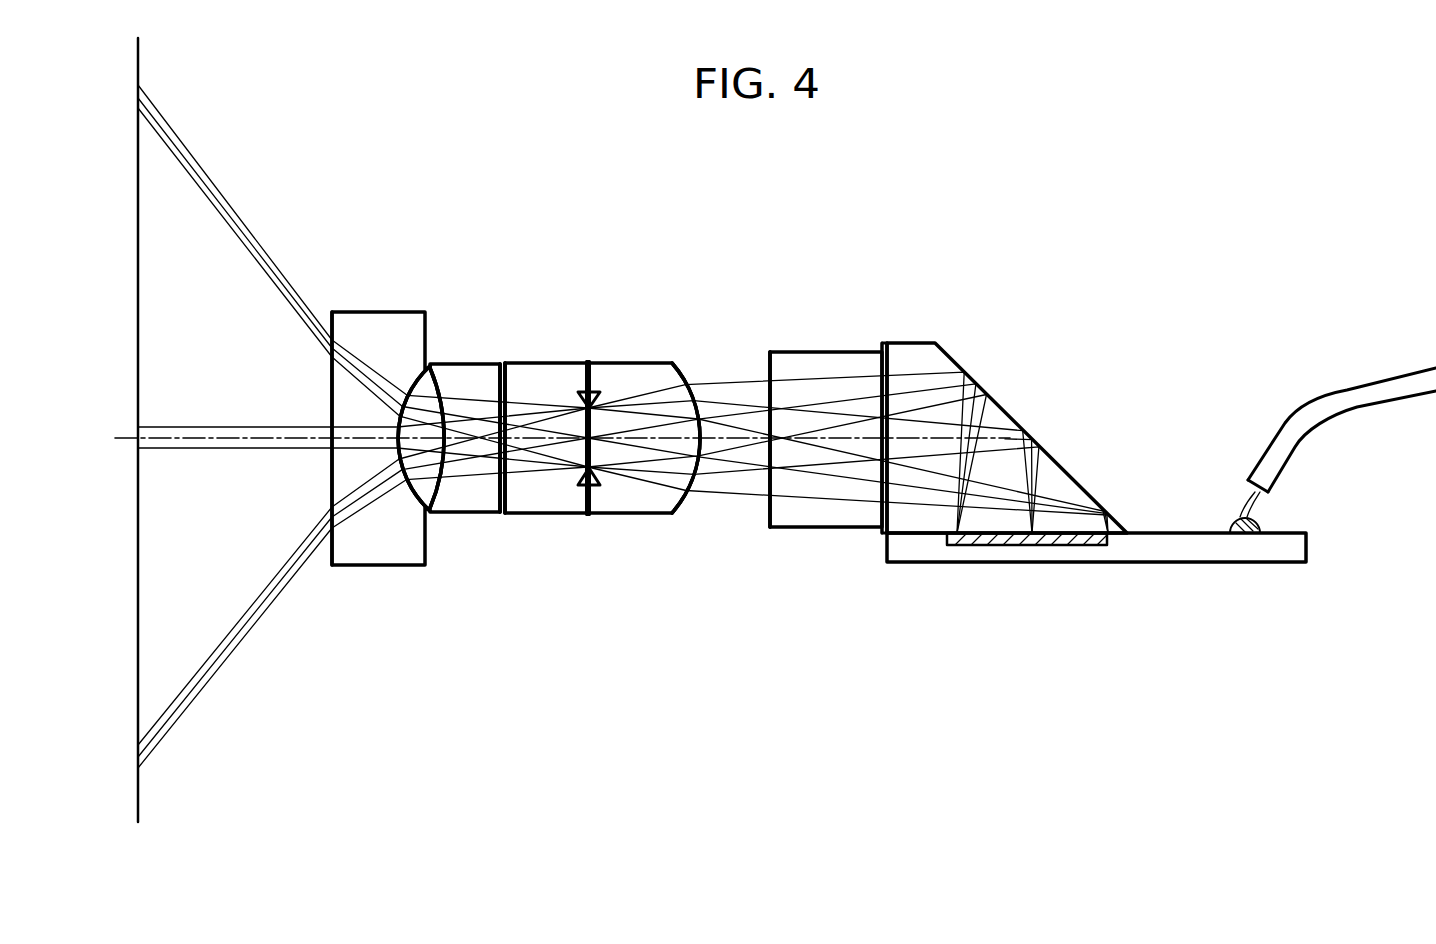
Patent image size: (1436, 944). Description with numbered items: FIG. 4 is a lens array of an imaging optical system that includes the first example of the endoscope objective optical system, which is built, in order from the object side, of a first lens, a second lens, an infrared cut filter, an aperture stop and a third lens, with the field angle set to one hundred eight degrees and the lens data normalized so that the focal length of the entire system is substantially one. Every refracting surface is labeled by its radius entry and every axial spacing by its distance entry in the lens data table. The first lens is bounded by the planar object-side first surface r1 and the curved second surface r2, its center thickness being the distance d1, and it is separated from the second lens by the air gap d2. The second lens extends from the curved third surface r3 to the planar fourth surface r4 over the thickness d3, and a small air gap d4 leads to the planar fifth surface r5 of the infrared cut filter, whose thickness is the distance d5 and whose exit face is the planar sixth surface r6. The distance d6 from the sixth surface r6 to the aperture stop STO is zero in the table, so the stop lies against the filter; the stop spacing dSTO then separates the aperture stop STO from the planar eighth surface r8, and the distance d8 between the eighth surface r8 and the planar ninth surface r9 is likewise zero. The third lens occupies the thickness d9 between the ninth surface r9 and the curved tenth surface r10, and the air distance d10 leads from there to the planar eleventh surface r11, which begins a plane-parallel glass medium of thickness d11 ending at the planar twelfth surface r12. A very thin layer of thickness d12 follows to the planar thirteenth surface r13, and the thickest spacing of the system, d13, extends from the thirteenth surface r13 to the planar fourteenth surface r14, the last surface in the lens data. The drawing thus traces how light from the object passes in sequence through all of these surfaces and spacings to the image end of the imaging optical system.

The first surface r1 is at (330, 387).
The second surface r2 is at (430, 375).
The third surface r3 is at (398, 467).
The fourth surface r4 is at (503, 385).
The fifth surface r5 is at (502, 367).
The sixth surface r6 is at (602, 363).
The eighth surface r8 is at (586, 505).
The ninth surface r9 is at (583, 492).
The tenth surface r10 is at (688, 363).
The eleventh surface r11 is at (770, 365).
The twelfth surface r12 is at (888, 358).
The thirteenth surface r13 is at (884, 535).
The fourteenth surface r14 is at (1073, 533).
The first surface spacing d1 is at (355, 432).
The second surface spacing d2 is at (409, 435).
The third surface spacing d3 is at (472, 438).
The fourth surface spacing d4 is at (500, 465).
The fifth surface spacing d5 is at (540, 470).
The sixth surface spacing d6 is at (617, 363).
The aperture stop spacing dSTO is at (629, 368).
The eighth surface spacing d8 is at (620, 383).
The ninth surface spacing d9 is at (650, 470).
The tenth surface spacing d10 is at (726, 440).
The eleventh surface spacing d11 is at (822, 438).
The twelfth surface spacing d12 is at (880, 457).
The thirteenth surface spacing d13 is at (1005, 440).
The aperture stop STO is at (590, 500).